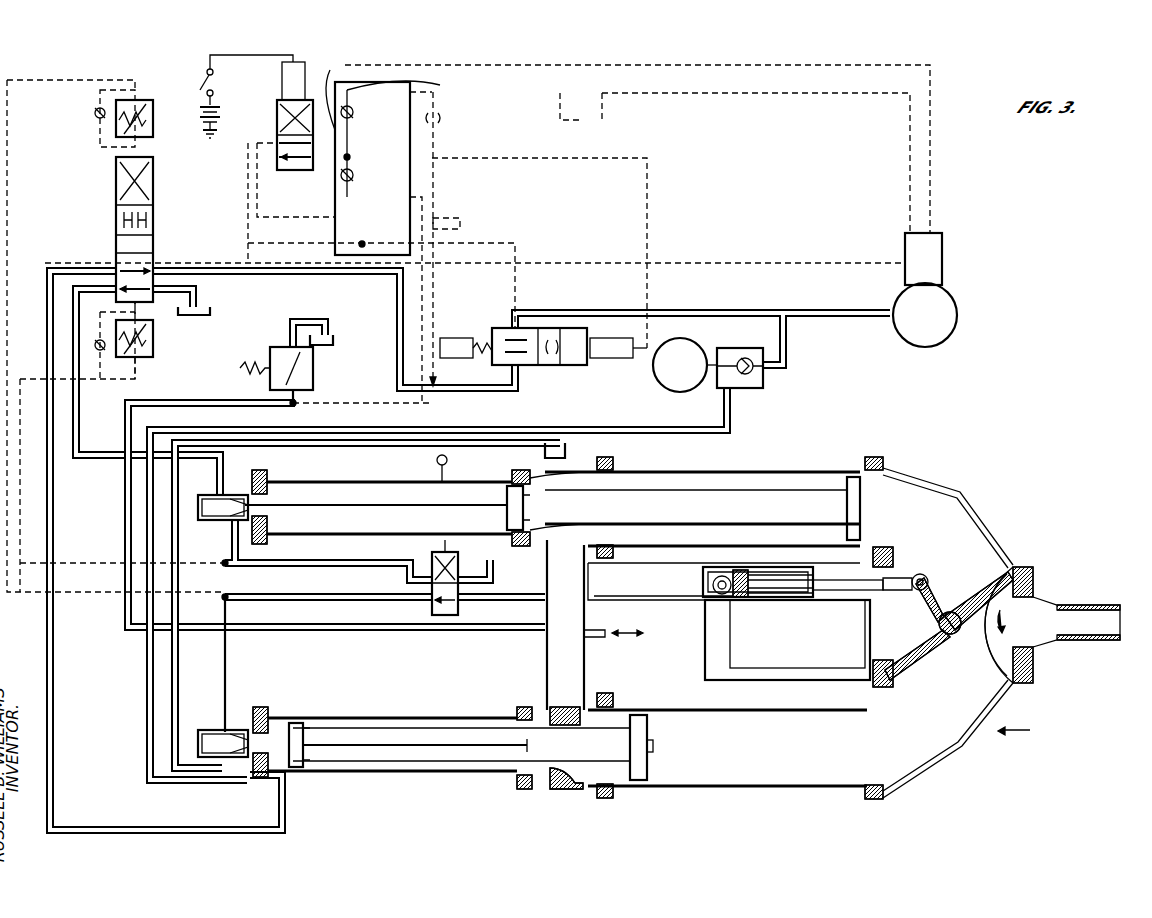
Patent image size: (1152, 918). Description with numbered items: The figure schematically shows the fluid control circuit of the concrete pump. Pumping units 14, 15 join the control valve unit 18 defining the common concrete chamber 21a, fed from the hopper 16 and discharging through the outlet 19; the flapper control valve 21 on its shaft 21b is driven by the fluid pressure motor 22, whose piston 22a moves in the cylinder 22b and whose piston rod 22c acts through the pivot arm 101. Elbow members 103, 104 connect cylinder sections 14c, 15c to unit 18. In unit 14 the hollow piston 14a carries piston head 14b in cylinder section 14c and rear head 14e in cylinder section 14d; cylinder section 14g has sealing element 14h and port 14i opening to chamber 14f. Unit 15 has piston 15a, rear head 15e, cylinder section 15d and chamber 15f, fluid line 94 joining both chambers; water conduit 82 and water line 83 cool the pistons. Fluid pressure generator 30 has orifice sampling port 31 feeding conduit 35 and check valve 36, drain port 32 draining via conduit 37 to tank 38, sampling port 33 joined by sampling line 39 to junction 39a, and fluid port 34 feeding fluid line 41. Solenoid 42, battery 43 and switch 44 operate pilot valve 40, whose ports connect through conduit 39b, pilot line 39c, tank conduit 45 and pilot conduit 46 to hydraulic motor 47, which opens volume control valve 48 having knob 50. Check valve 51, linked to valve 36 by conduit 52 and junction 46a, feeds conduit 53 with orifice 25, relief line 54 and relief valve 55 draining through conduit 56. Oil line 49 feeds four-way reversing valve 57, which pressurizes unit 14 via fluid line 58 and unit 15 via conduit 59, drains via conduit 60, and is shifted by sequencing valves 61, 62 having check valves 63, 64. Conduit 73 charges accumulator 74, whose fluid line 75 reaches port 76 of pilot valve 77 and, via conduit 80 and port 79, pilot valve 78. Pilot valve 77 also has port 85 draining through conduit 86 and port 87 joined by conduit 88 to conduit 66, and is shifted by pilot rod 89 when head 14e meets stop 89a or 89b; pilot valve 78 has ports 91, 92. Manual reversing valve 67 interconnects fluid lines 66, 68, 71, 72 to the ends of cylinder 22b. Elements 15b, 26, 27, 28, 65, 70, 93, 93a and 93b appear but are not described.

The pumping unit 14 is at (753, 792).
The piston 14a is at (355, 772).
The piston head 14b is at (650, 728).
The cylinder section 14c is at (640, 790).
The cylinder section 14d is at (340, 775).
The piston head 14e is at (305, 722).
The chamber 14f is at (525, 789).
The cylinder section 14g is at (583, 789).
The sealing element 14h is at (565, 789).
The port 14i is at (550, 707).
The pumping unit 15 is at (366, 480).
The piston 15a is at (540, 482).
The end cap 15b is at (855, 477).
The cylinder section 15c is at (665, 470).
The cylinder section 15d is at (312, 536).
The rear piston head 15e is at (580, 556).
The chamber 15f is at (490, 565).
The hopper 16 is at (705, 662).
The control valve unit 18 is at (1022, 725).
The common outlet 19 is at (1070, 605).
The control valve 21 is at (1000, 565).
The common concrete chamber 21a is at (967, 646).
The central pivotable shaft 21b is at (958, 632).
The fluid pressure motor 22 is at (880, 560).
The piston 22a is at (740, 597).
The cylinder 22b is at (815, 597).
The piston rod 22c is at (895, 575).
The orifice 25 is at (390, 205).
The orifice 26 is at (445, 121).
The line 27 is at (445, 142).
The line 28 is at (637, 149).
The fluid pressure generator 30 is at (957, 315).
The orifice sampling port 31 is at (932, 233).
The drain port 32 is at (910, 233).
The sampling port 33 is at (905, 262).
The fluid port 34 is at (902, 330).
The orifice sampling conduit 35 is at (932, 158).
The check valve 36 is at (353, 112).
The conduit 37 is at (800, 98).
The fluid tank 38 is at (212, 320).
The sampling line 39 is at (760, 263).
The junction 39a is at (362, 243).
The conduit 39b is at (246, 240).
The pilot line 39c is at (517, 252).
The pilot valve 40 is at (277, 104).
The fluid line 41 is at (522, 315).
The solenoid 42 is at (282, 72).
The vehicle battery 43 is at (203, 112).
The on-off switch 44 is at (205, 72).
The conduit 45 is at (288, 217).
The pilot conduit 46 is at (515, 158).
The junction 46a is at (352, 156).
The hydraulic motor 47 is at (605, 358).
The volume control valve 48 is at (550, 365).
The oil line 49 is at (215, 271).
The manual volume control knob 50 is at (456, 338).
The check valve 51 is at (353, 175).
The conduit 52 is at (328, 90).
The conduit 53 is at (355, 403).
The relief fluid line 54 is at (220, 403).
The relief valve 55 is at (313, 368).
The conduit 56 is at (300, 322).
The four-way reversing valve 57 is at (116, 195).
The fluid line 58 is at (50, 268).
The fluid conduit 59 is at (80, 460).
The conduit 60 is at (212, 298).
The sequencing valve 61 is at (153, 108).
The sequencing valve 62 is at (153, 338).
The check valve 63 is at (95, 113).
The check valve 64 is at (95, 345).
The line 65 is at (30, 80).
The fluid line 66 is at (318, 597).
The reversing valve 67 is at (460, 600).
The fluid line 68 is at (665, 603).
The line 70 is at (100, 380).
The fluid line 71 is at (270, 563).
The fluid line 72 is at (600, 563).
The conduit 73 is at (790, 372).
The accumulator 74 is at (740, 353).
The fluid line 75 is at (180, 430).
The port 76 is at (215, 770).
The pilot valve 77 is at (258, 707).
The pilot valve 78 is at (150, 520).
The port 79 is at (128, 497).
The conduit 80 is at (228, 470).
The water conduit 82 is at (605, 640).
The water line 83 is at (645, 634).
The port 85 is at (240, 757).
The fluid conduit 86 is at (150, 782).
The port 87 is at (225, 730).
The fluid conduit 88 is at (228, 640).
The pilot rod 89 is at (440, 745).
The stop 89a is at (415, 772).
The stop 89b is at (295, 720).
The port 91 is at (222, 520).
The port 92 is at (232, 520).
The piston rod 93 is at (408, 512).
The piston 93a is at (535, 492).
The flange 93b is at (281, 510).
The fluid line 94 is at (545, 652).
The pivot arm 101 is at (958, 605).
The elbow member 103 is at (975, 740).
The elbow member 104 is at (940, 488).